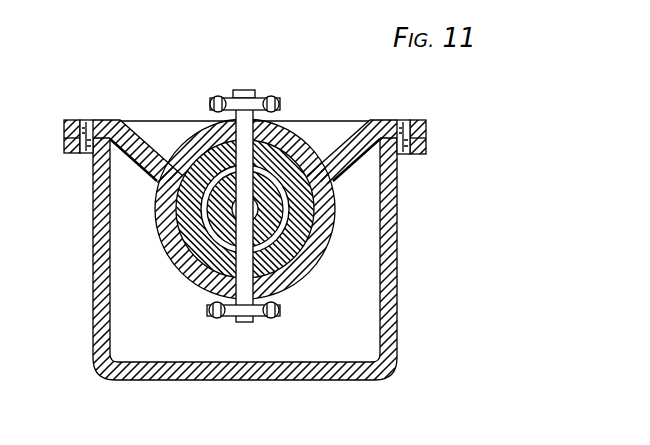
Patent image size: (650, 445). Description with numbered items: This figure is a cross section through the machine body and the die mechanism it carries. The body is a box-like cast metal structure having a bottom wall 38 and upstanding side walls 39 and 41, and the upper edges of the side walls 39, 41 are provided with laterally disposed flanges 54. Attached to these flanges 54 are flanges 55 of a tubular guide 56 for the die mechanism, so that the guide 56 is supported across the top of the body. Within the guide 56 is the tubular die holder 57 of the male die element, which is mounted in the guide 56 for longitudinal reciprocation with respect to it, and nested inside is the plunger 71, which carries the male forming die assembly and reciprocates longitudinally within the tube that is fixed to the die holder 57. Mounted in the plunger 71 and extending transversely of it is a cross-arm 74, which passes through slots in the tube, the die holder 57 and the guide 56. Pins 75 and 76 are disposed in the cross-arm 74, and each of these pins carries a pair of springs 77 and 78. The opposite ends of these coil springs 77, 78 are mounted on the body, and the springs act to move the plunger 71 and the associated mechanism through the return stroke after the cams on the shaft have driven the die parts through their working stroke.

The bottom wall 38 is at (216, 380).
The side wall 39 is at (399, 217).
The side wall 41 is at (93, 250).
The flange 54 is at (64, 153).
The flange 55 is at (112, 121).
The tubular guide 56 is at (288, 137).
The die holder 57 is at (300, 228).
The plunger 71 is at (273, 233).
The cross-arm 74 is at (245, 90).
The pin 75 is at (251, 99).
The pin 76 is at (238, 317).
The springs 77 is at (218, 94).
The springs 78 is at (215, 320).